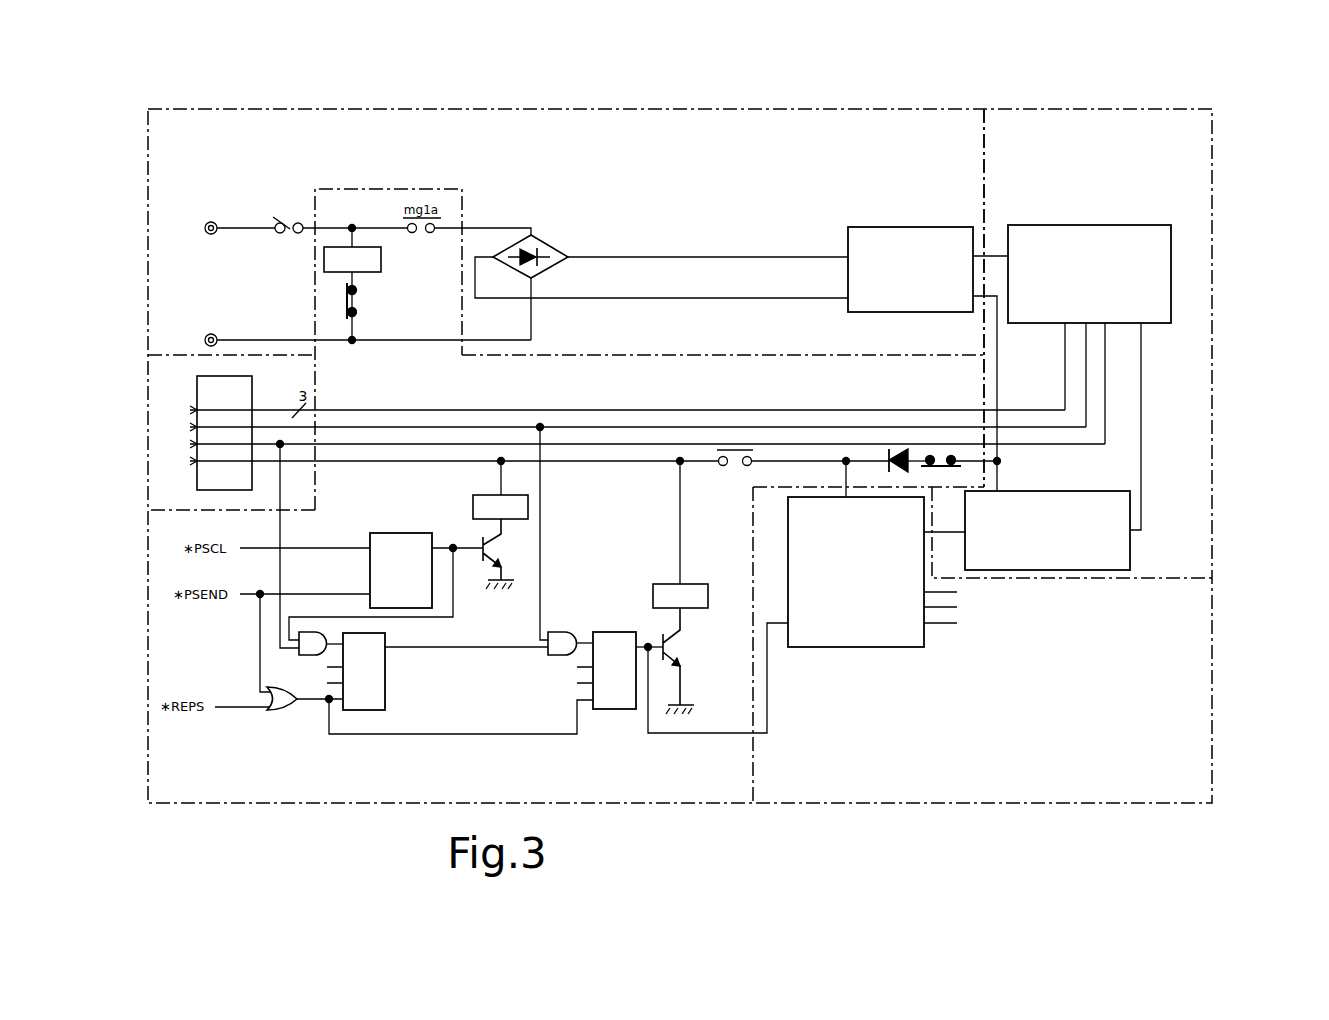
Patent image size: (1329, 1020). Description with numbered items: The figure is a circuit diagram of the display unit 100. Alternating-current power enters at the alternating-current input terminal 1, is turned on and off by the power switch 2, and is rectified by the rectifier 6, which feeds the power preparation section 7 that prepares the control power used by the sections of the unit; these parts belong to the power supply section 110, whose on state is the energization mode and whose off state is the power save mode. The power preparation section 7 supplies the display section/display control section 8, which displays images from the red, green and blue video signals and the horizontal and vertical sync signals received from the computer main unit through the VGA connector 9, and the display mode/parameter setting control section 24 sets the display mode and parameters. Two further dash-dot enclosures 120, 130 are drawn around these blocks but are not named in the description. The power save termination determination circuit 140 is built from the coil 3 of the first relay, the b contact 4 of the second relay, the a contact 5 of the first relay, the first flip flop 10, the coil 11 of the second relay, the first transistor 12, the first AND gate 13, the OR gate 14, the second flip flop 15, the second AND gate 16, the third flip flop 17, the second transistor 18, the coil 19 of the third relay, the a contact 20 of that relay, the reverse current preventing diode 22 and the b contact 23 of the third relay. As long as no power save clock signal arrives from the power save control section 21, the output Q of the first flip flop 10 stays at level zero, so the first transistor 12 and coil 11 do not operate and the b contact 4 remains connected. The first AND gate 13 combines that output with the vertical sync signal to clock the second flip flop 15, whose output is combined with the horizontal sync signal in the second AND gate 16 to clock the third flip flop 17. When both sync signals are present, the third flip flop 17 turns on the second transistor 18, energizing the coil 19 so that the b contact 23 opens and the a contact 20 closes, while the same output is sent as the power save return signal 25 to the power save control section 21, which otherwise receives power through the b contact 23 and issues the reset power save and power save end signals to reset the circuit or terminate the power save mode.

The alternating-current input terminal 1 is at (211, 221).
The power switch 2 is at (282, 216).
The coil of first relay mg1 3 is at (381, 260).
The b contact of second relay mg2 4 is at (344, 302).
The a contact of first relay mg1 5 is at (443, 212).
The rectifier 6 is at (547, 243).
The power preparation section 7 is at (917, 226).
The display section/display control section 8 is at (1118, 224).
The VGA connector 9 is at (197, 480).
The first flip flop 10 is at (373, 533).
The coil of second relay mg2 11 is at (473, 504).
The first transistor 12 is at (497, 549).
The first AND gate 13 is at (306, 654).
The OR gate 14 is at (279, 713).
The second flip flop 15 is at (385, 695).
The second AND gate 16 is at (559, 631).
The third flip flop 17 is at (611, 710).
The second transistor 18 is at (686, 648).
The coil of third relay mg3 19 is at (700, 584).
The a contact of third relay mg3 20 is at (726, 470).
The power save control section 21 is at (788, 538).
The reverse current preventing diode 22 is at (899, 447).
The b contact of third relay mg3 23 is at (940, 469).
The display mode/parameter setting control section 24 is at (1130, 553).
The power save return signal 25 is at (713, 735).
The display unit 100 is at (1236, 124).
The power supply section 110 is at (797, 105).
The display section 120 is at (1100, 105).
The control section 130 is at (982, 806).
The power save termination determination circuit 140 is at (675, 806).